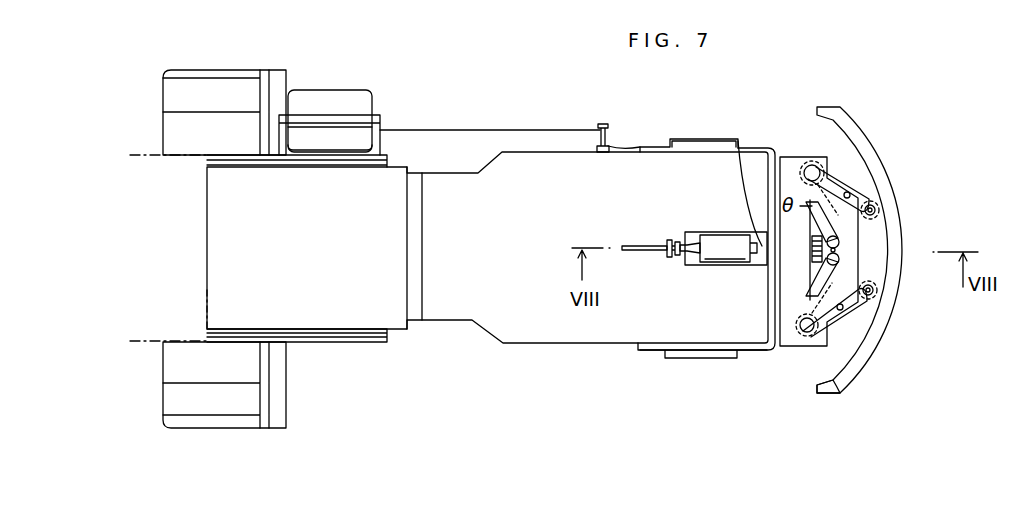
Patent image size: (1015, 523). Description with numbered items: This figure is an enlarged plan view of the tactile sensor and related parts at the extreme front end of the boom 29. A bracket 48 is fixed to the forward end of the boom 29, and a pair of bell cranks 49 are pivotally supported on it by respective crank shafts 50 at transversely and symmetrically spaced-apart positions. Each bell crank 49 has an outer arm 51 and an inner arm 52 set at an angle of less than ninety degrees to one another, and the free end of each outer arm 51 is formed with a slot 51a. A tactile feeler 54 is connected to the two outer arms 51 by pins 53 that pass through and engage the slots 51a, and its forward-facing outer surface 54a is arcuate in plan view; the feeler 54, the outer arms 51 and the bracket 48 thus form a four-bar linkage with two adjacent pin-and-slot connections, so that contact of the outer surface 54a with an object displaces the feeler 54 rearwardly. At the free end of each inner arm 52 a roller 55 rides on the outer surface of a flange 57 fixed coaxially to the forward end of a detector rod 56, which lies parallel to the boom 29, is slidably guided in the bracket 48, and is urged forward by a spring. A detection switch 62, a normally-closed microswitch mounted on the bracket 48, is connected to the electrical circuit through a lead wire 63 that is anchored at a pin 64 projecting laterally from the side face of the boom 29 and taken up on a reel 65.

The boom 29 is at (528, 345).
The bracket 48 is at (757, 148).
The bell crank 49 is at (840, 154).
The crank shaft 50 is at (804, 175).
The outer arm 51 is at (840, 175).
The slot 51a is at (852, 193).
The inner arm 52 is at (822, 212).
The pin 53 is at (875, 206).
The tactile feeler 54 is at (887, 229).
The outer surface 54a is at (850, 378).
The roller 55 is at (853, 235).
The detector rod 56 is at (812, 249).
The flange 57 is at (840, 250).
The detection switch 62 is at (707, 262).
The lead wire 63 is at (434, 128).
The pin 64 is at (601, 123).
The reel 65 is at (328, 97).